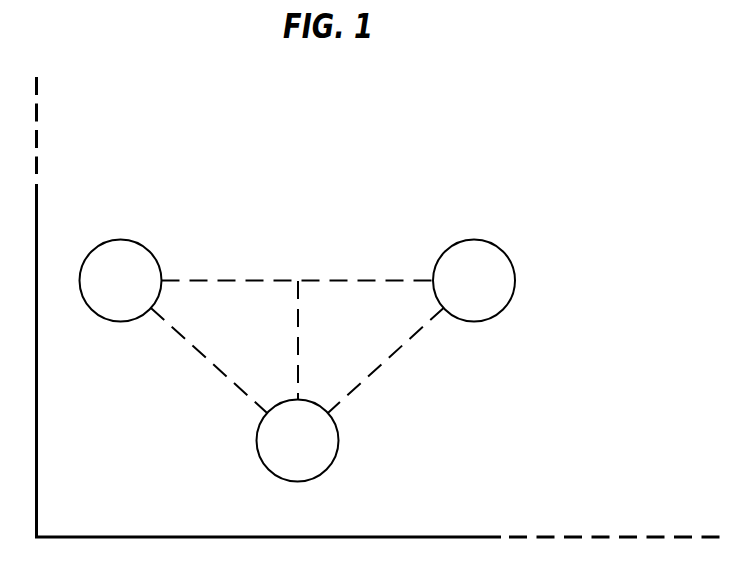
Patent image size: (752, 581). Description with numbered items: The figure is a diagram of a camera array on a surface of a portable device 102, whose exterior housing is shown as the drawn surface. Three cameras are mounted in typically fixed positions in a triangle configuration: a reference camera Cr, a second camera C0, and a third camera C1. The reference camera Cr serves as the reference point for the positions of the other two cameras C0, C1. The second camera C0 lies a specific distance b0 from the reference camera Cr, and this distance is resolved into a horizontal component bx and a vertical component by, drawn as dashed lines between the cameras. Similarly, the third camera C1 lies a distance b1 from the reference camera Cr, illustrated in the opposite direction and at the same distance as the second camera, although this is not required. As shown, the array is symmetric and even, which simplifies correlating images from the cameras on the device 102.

The portable device 102 is at (507, 462).
The second camera C0 is at (121, 281).
The third camera C1 is at (474, 281).
The reference camera Cr is at (298, 441).
The horizontal component bx is at (298, 257).
The vertical component by is at (317, 340).
The distance b0 is at (209, 360).
The distance b1 is at (386, 360).